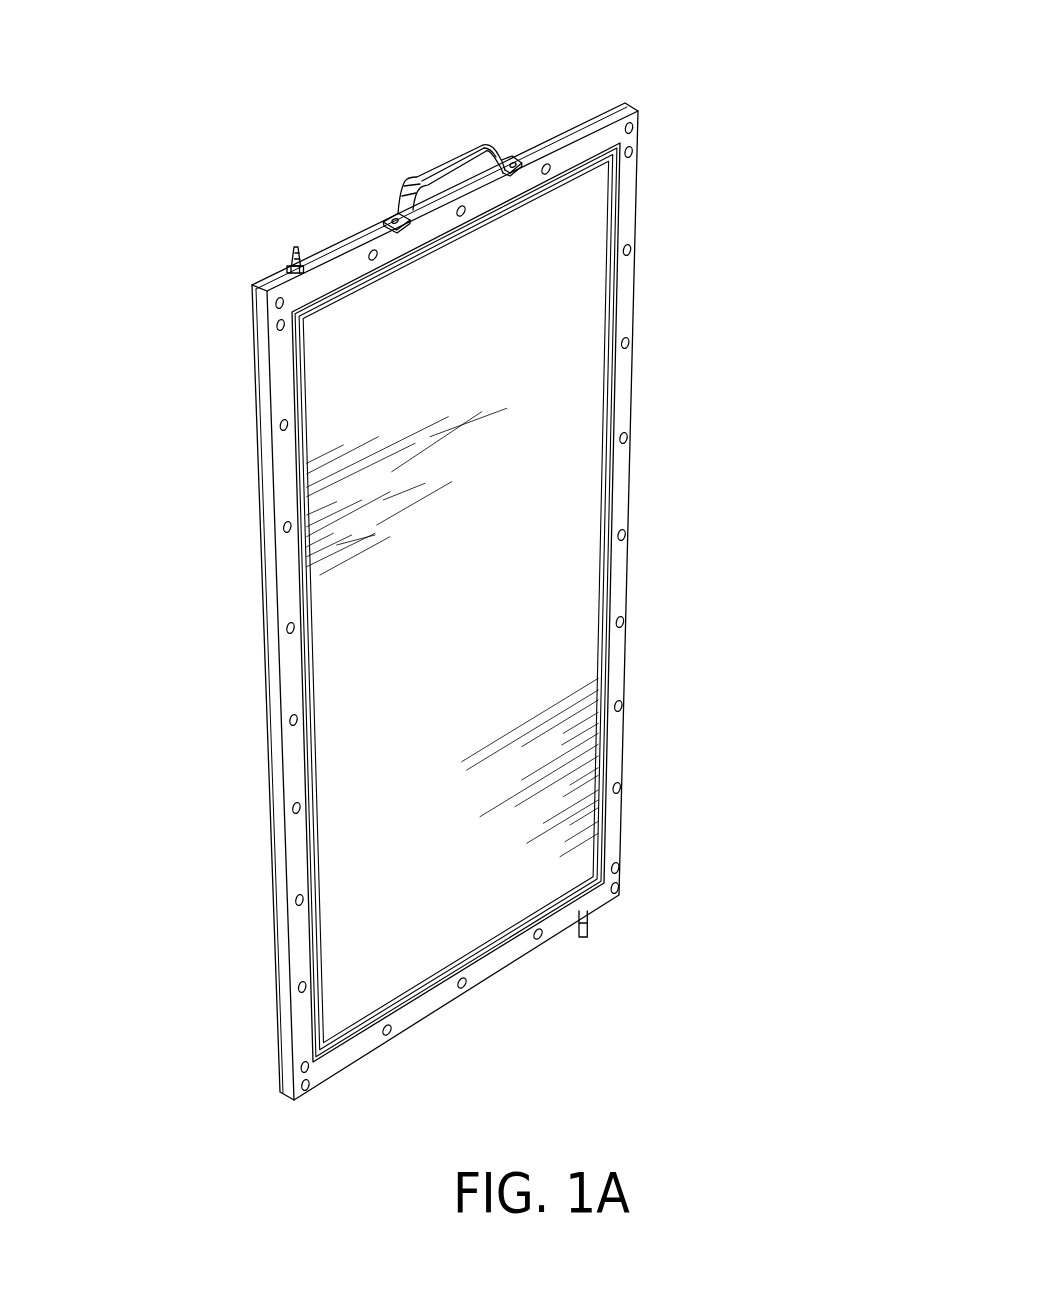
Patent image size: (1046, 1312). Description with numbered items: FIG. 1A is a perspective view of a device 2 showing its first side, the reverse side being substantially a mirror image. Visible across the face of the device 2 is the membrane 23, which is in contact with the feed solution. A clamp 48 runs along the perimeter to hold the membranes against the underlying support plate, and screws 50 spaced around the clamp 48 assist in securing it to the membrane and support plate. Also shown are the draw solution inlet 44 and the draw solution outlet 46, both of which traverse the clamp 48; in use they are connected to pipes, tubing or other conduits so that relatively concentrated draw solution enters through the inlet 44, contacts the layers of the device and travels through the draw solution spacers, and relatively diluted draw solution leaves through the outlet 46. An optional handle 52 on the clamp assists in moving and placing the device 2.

The device 2 is at (233, 132).
The membrane 23 is at (495, 550).
The draw solution inlet 44 is at (588, 925).
The draw solution outlet 46 is at (291, 252).
The clamp 48 is at (589, 147).
The screws 50 is at (630, 438).
The handle 52 is at (452, 163).